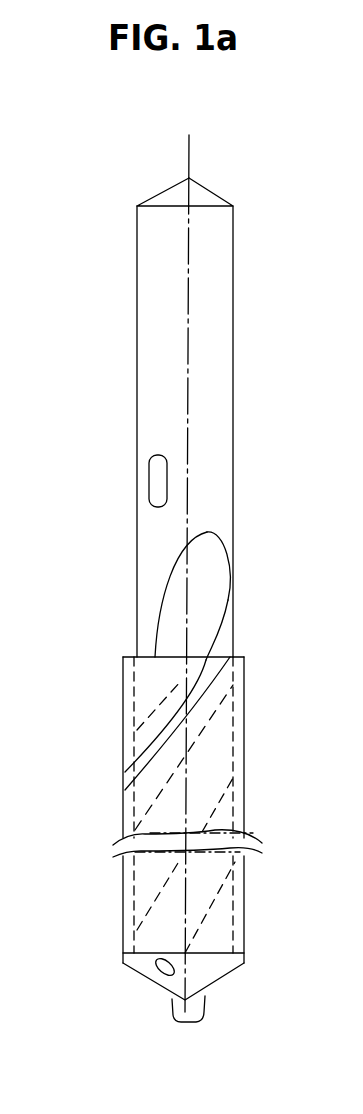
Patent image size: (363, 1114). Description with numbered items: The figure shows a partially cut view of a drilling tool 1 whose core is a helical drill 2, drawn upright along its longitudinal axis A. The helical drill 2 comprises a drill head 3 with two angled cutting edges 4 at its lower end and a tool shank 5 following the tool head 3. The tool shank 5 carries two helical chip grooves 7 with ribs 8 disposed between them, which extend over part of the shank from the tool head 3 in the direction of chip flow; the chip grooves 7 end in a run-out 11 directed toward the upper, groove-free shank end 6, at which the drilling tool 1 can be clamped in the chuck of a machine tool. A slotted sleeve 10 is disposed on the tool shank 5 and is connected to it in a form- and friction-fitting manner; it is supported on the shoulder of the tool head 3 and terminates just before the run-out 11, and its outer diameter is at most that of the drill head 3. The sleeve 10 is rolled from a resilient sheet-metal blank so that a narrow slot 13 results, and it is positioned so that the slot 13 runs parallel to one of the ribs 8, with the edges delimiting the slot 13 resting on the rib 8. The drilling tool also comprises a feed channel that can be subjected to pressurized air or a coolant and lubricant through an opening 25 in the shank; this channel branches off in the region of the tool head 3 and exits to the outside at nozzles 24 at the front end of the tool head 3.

The drilling tool 1 is at (286, 134).
The longitudinal axis A is at (187, 168).
The helical drill 2 is at (234, 396).
The groove-free shank end 6 is at (223, 267).
The opening 25 is at (153, 481).
The run-out of the chip grooves 11 is at (217, 582).
The tool shank 5 is at (233, 617).
The rib 8 is at (223, 645).
The slotted sleeve 10 is at (245, 703).
The slot 13 is at (128, 770).
The helical chip groove 7 is at (215, 776).
The drill head 3 is at (218, 973).
The nozzle 24 is at (157, 977).
The cutting edge 4 is at (172, 1022).